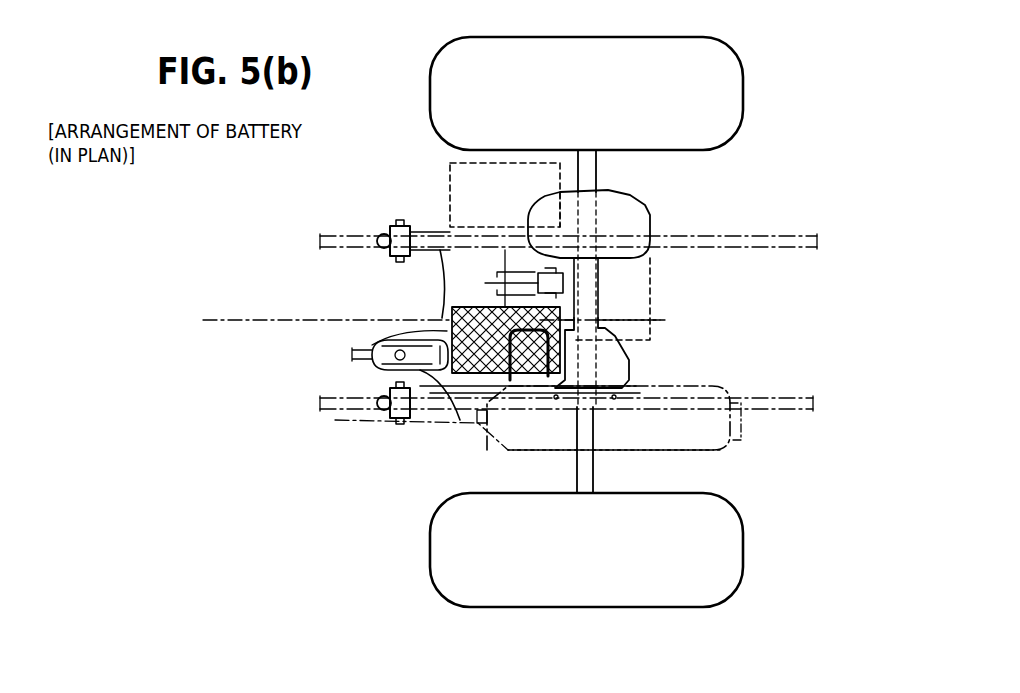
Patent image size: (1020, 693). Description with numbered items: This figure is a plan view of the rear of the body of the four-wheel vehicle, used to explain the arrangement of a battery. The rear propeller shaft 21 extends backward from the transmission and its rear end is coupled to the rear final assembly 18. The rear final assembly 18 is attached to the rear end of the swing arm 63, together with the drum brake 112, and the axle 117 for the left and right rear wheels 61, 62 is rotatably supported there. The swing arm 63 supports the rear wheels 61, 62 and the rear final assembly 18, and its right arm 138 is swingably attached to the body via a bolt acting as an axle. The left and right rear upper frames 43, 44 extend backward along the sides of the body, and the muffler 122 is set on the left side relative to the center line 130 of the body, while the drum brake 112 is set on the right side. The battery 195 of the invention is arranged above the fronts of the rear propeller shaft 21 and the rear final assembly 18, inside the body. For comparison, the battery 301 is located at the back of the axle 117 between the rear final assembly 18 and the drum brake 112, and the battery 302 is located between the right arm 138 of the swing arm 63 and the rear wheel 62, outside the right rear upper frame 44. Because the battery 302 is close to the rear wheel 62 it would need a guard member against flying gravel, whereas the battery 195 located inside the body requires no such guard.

The rear final assembly 18 is at (633, 362).
The rear propeller shaft 21 is at (440, 325).
The left rear upper frame 43 is at (790, 418).
The right rear upper frame 44 is at (800, 235).
The left rear wheel 61 is at (743, 556).
The right rear wheel 62 is at (743, 88).
The swing arm 63 is at (423, 272).
The drum brake 112 is at (647, 212).
The axle 117 is at (614, 183).
The muffler 122 is at (712, 455).
The center line of the body 130 is at (222, 320).
The right arm 138 is at (421, 226).
The battery 195 is at (450, 310).
The battery (comparative example) 301 is at (652, 281).
The battery (comparative example) 302 is at (450, 200).